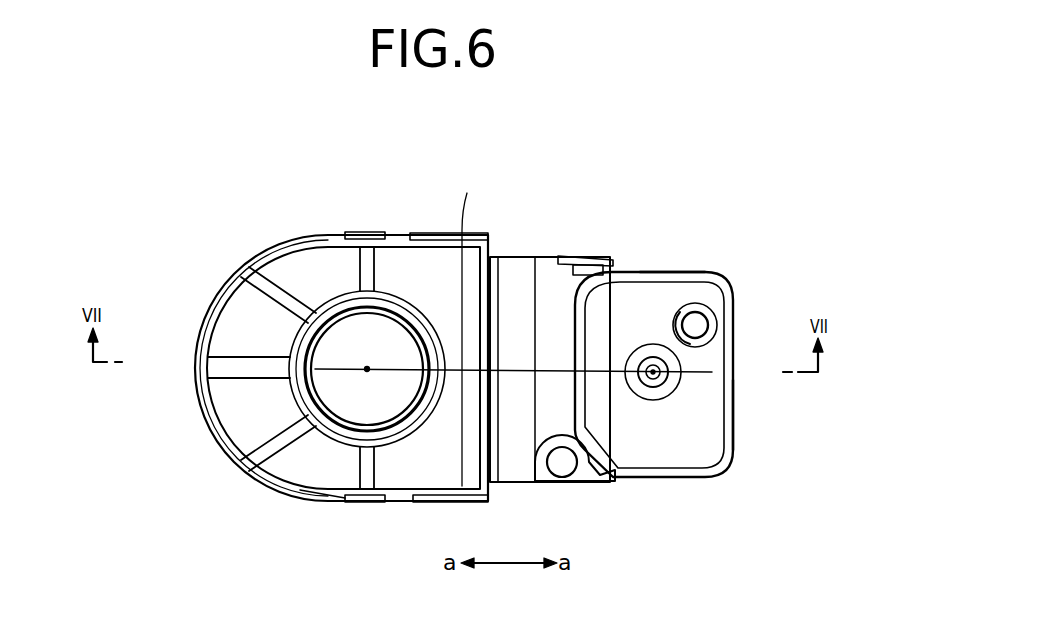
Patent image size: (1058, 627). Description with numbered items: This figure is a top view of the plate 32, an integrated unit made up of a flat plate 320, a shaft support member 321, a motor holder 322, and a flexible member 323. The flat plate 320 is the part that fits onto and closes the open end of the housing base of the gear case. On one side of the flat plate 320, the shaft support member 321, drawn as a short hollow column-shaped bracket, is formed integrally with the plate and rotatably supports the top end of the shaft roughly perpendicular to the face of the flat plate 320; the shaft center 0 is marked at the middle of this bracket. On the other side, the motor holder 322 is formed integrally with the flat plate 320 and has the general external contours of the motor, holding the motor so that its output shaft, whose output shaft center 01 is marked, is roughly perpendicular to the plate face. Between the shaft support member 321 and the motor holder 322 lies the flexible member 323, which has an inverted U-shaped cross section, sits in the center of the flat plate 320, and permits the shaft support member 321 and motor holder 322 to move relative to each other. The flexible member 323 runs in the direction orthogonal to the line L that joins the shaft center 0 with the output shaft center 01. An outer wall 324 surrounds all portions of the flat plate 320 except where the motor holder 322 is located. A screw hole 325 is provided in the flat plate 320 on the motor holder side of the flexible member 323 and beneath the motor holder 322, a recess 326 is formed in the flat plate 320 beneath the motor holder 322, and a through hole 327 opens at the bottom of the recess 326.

The center of the shaft 0 is at (367, 366).
The flat plate 320 is at (422, 267).
The line joining the centers L is at (466, 327).
The flexible member 323 is at (523, 277).
The motor holder 322 is at (723, 288).
The screw hole 325 is at (697, 332).
The recess 326 is at (673, 387).
The through hole 327 is at (630, 400).
The plate 32 is at (718, 478).
The center of the output shaft 01 is at (665, 387).
The shaft support member 321 is at (293, 390).
The outer wall 324 is at (333, 493).